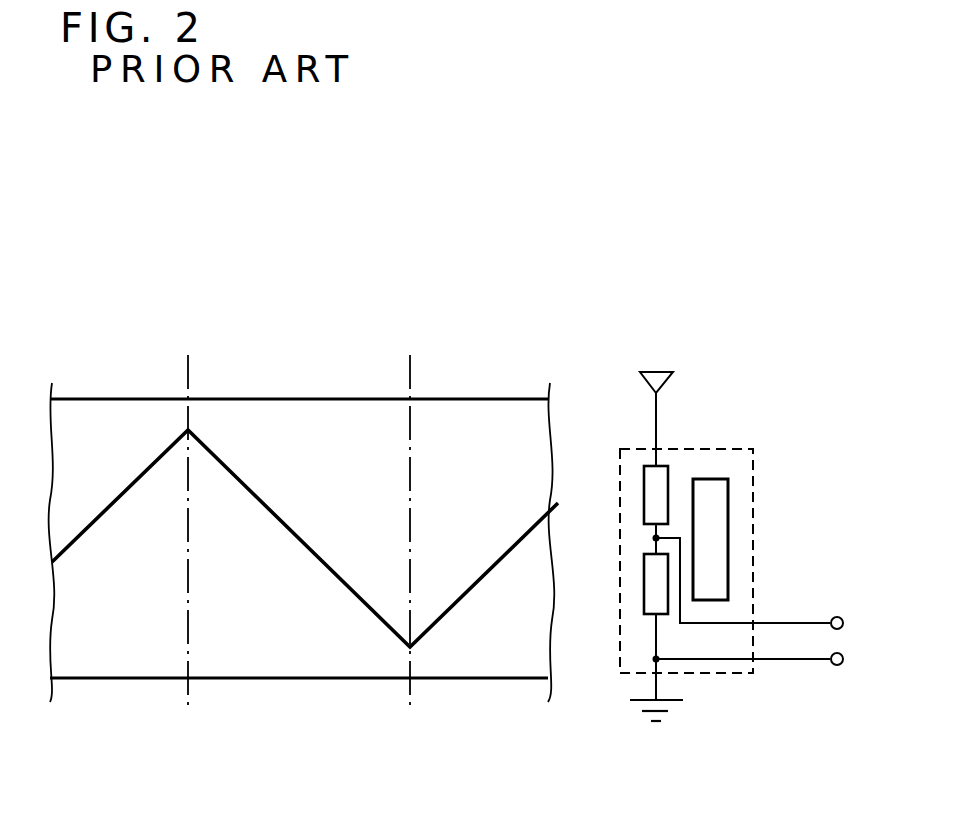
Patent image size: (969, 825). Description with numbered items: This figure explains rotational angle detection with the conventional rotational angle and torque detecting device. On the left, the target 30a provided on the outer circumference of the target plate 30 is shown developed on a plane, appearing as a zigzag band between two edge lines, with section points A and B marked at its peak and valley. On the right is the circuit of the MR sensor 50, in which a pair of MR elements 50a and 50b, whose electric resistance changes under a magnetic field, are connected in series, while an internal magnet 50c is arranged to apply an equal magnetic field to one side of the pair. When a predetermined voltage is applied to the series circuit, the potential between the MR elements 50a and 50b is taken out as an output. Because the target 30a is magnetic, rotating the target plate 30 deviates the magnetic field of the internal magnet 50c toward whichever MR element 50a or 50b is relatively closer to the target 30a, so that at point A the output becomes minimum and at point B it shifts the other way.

The target plate 30 is at (300, 399).
The target 30a is at (336, 578).
The MR sensor 50 is at (753, 503).
The MR element 50a is at (644, 497).
The MR element 50b is at (644, 588).
The internal magnet 50c is at (712, 479).